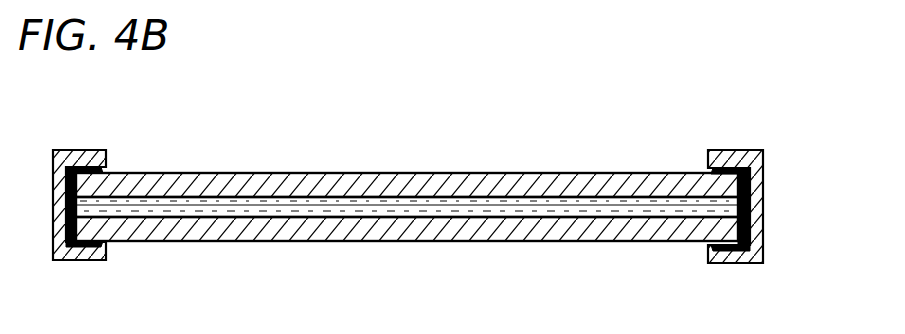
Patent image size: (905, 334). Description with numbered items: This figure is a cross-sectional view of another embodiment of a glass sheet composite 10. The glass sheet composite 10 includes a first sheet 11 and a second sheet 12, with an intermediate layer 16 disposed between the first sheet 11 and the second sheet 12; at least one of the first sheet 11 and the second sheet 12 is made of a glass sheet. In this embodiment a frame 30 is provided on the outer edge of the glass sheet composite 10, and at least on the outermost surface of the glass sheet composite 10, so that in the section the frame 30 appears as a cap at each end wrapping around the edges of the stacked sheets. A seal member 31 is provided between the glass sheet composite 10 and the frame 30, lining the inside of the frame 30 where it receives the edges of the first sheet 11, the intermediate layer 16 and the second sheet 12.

The glass sheet composite 10 is at (441, 196).
The first sheet 11 is at (500, 188).
The second sheet 12 is at (480, 228).
The intermediate layer 16 is at (360, 205).
The frame 30 is at (765, 197).
The seal member 31 is at (104, 242).